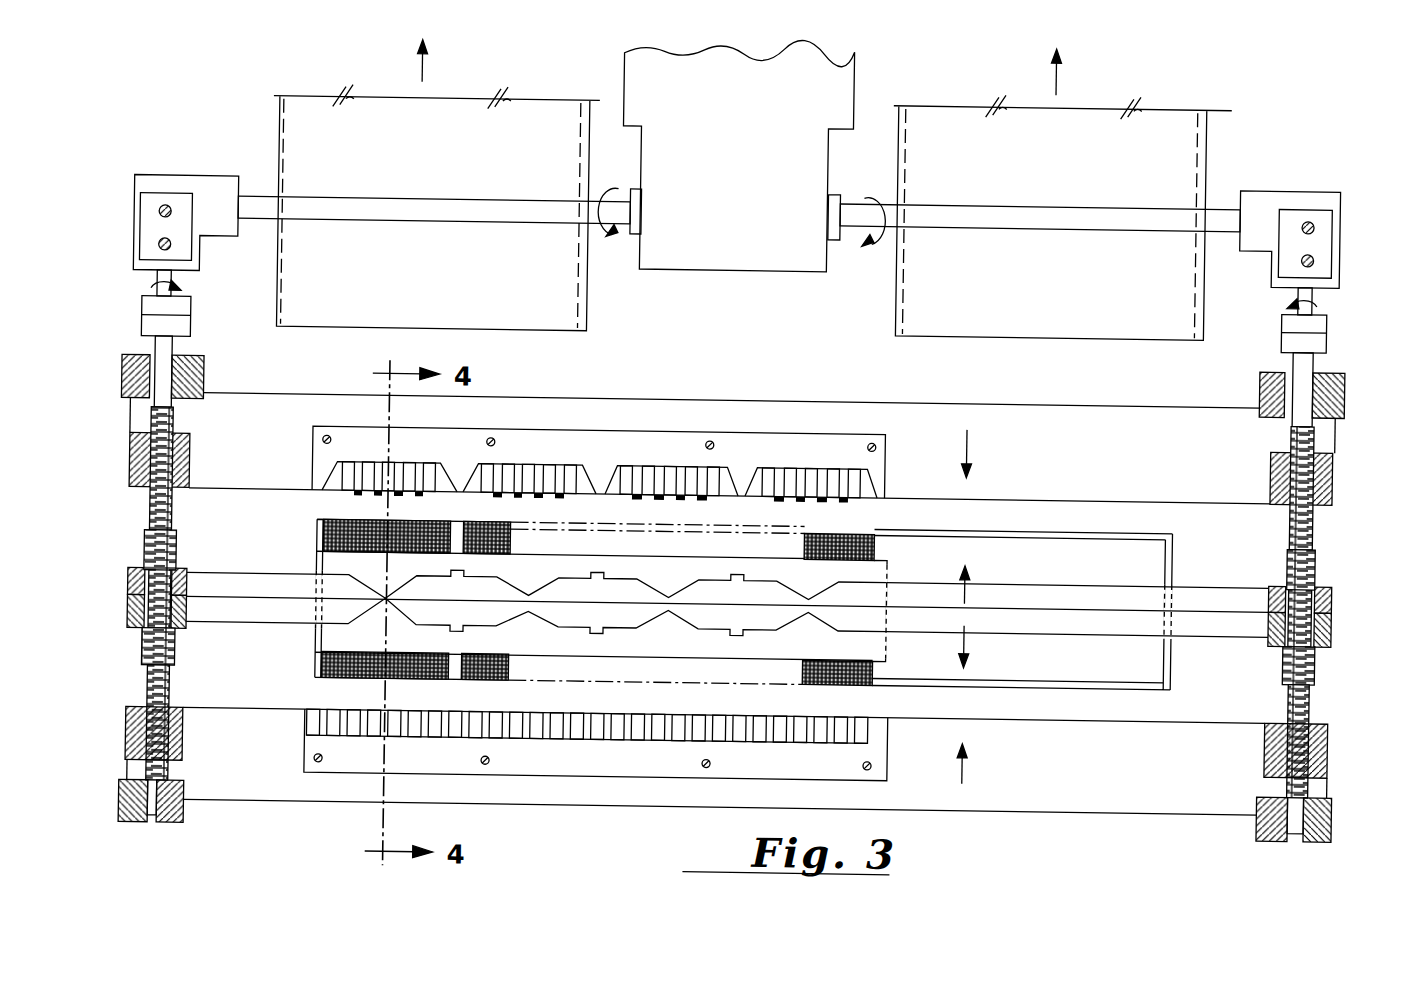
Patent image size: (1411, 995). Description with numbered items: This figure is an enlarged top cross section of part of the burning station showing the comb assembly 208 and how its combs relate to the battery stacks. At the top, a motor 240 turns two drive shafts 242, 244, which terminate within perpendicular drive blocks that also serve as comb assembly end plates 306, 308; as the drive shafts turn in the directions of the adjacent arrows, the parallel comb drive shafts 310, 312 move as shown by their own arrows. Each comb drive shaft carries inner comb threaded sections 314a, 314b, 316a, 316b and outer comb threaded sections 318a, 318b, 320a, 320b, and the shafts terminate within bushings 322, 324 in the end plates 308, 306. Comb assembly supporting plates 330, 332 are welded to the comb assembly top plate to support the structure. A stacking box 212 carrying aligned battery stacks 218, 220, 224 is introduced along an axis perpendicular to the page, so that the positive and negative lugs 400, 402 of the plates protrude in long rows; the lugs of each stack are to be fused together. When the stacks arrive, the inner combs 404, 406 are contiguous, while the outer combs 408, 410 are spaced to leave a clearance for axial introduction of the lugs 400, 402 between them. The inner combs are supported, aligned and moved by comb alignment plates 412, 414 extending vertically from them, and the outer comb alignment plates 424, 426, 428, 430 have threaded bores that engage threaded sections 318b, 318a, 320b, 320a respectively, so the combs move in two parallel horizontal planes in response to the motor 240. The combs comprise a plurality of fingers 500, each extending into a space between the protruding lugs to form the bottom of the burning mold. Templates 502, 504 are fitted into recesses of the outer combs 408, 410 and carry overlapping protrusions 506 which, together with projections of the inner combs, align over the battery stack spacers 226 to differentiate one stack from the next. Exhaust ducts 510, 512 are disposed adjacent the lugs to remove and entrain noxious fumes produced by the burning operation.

The comb assembly 208 is at (94, 682).
The stacking box 212 is at (1173, 560).
The battery stack 218 is at (317, 540).
The battery stack 220 is at (500, 548).
The battery stack 224 is at (877, 546).
The battery stack spacer 226 is at (500, 545).
The motor 240 is at (818, 178).
The drive shaft 242 is at (438, 204).
The drive shaft 244 is at (1040, 205).
The comb assembly end plate 306 is at (226, 184).
The comb assembly end plate 308 is at (1282, 185).
The comb drive shaft 310 is at (155, 345).
The comb drive shaft 312 is at (1312, 345).
The inner comb threaded section 314a is at (1316, 557).
The inner comb threaded section 314b is at (1317, 658).
The inner comb threaded section 316a is at (145, 558).
The inner comb threaded section 316b is at (144, 652).
The outer comb threaded section 318a is at (1313, 512).
The outer comb threaded section 318b is at (1312, 696).
The outer comb threaded section 320a is at (150, 504).
The outer comb threaded section 320b is at (172, 697).
The bushing 322 is at (1308, 834).
The bushing 324 is at (188, 826).
The comb assembly supporting plate 330 is at (1343, 380).
The comb assembly supporting plate 332 is at (121, 380).
The protruding lug 400 is at (352, 683).
The protruding lug 402 is at (352, 525).
The inner comb 404 is at (1086, 631).
The inner comb 406 is at (1062, 594).
The outer comb 408 is at (1187, 728).
The outer comb 410 is at (1028, 430).
The comb alignment plate 412 is at (129, 622).
The comb alignment plate 414 is at (129, 594).
The outer comb alignment plate 424 is at (1331, 743).
The outer comb alignment plate 426 is at (1333, 448).
The outer comb alignment plate 428 is at (186, 750).
The outer comb alignment plate 430 is at (130, 448).
The finger 500 is at (742, 500).
The template 502 is at (582, 790).
The template 504 is at (668, 445).
The overlapping protrusion 506 is at (512, 466).
The exhaust duct 510 is at (315, 112).
The exhaust duct 512 is at (950, 115).